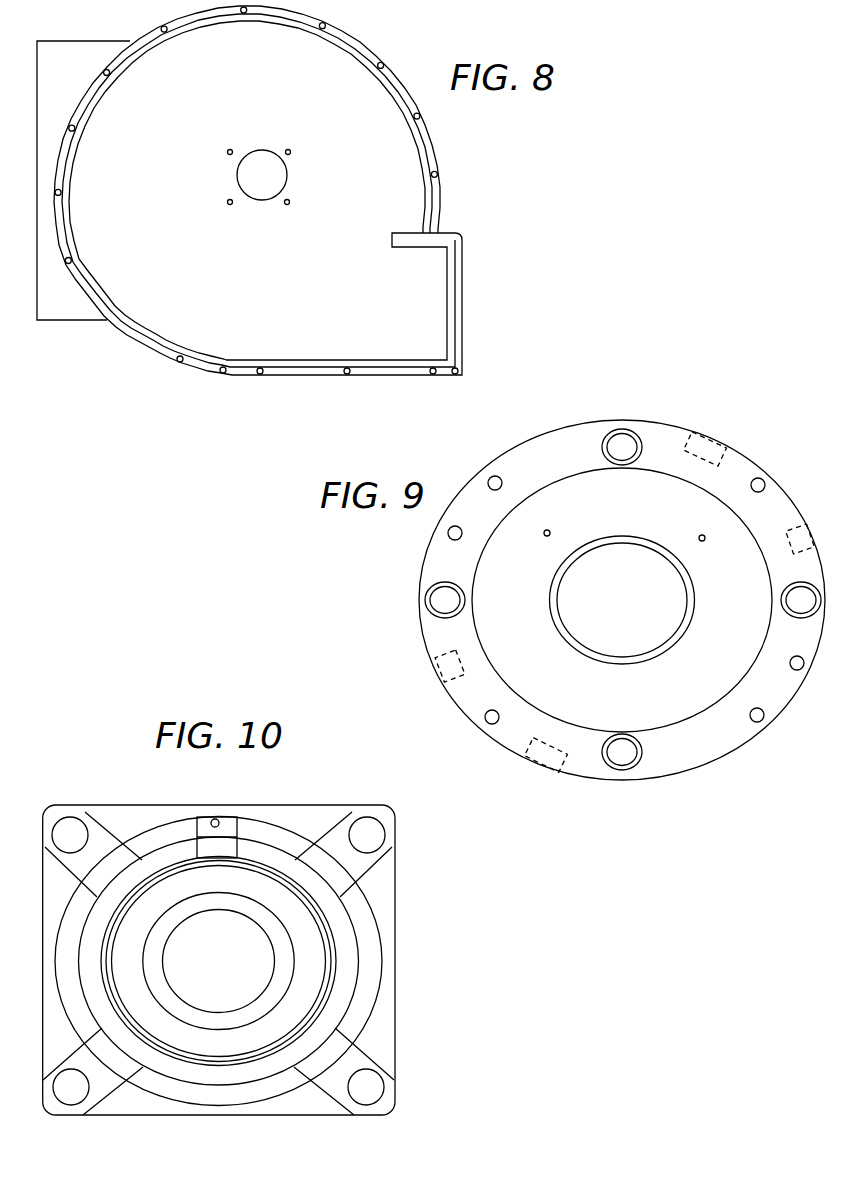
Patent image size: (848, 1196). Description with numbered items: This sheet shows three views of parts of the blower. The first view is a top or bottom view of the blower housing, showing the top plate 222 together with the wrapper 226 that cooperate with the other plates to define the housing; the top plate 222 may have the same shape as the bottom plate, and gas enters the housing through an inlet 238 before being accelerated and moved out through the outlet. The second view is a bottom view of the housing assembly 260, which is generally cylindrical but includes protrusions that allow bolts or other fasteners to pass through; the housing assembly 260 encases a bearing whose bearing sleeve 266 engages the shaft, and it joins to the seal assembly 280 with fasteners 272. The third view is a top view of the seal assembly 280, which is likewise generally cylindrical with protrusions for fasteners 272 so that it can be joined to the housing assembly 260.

In FIG. 8, the top plate 222 is at (290, 106).
In FIG. 8, the wrapper 226 is at (442, 187).
In FIG. 8, the inlet 238 is at (270, 183).
In FIG. 9, the housing assembly 260 is at (633, 420).
In FIG. 9, the bearing sleeve 266 is at (567, 633).
In FIG. 9, the fasteners 272 is at (627, 760).
In FIG. 10, the seal assembly 280 is at (268, 805).